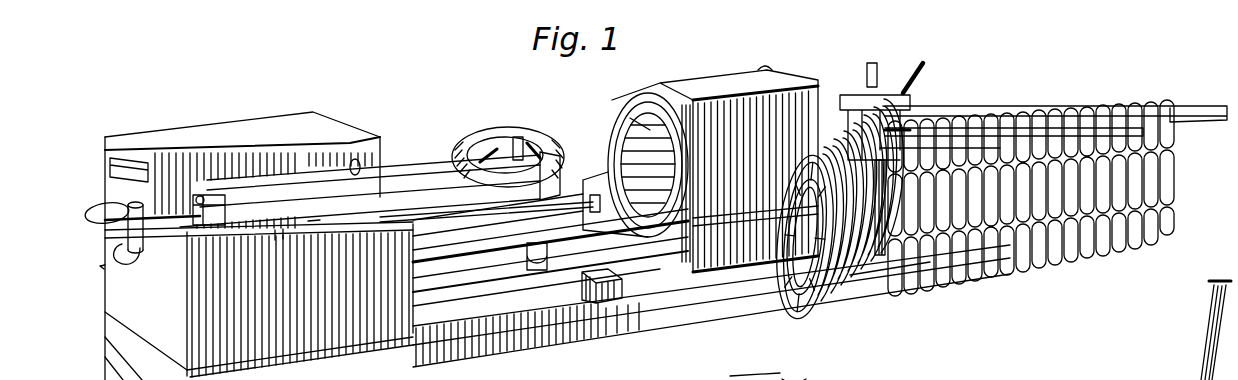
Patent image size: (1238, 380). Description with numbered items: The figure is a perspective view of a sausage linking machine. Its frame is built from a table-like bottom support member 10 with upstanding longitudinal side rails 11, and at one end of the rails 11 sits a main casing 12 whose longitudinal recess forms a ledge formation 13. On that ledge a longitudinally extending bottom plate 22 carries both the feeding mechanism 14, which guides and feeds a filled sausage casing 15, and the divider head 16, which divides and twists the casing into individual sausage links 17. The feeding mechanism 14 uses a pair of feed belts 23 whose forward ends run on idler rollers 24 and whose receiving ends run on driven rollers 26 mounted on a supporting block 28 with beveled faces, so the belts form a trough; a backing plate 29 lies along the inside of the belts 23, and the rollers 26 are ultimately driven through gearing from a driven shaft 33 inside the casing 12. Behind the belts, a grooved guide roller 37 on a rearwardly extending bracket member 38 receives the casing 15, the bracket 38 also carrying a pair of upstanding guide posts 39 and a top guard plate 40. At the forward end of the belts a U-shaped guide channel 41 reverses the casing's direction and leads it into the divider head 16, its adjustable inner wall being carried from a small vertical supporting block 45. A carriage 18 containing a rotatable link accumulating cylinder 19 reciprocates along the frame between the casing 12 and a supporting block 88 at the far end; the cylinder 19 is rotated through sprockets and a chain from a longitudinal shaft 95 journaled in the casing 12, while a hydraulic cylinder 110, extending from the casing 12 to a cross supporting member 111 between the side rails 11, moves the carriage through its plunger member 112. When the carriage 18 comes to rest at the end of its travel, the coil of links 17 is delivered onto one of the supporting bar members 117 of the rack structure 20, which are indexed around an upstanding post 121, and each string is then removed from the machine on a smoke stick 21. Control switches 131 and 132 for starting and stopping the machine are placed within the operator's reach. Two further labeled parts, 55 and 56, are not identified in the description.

The bottom support member 10 is at (547, 350).
The side rails 11 is at (570, 338).
The main casing 12 is at (252, 128).
The ledge formation 13 is at (275, 240).
The casing feeding mechanism 14 is at (402, 167).
The filled sausage casing 15 is at (100, 266).
The divider head 16 is at (487, 130).
The sausage links 17 is at (823, 303).
The carriage 18 is at (688, 80).
The link accumulating cylinder 19 is at (622, 148).
The rack structure 20 is at (896, 70).
The smoke stick 21 is at (1200, 110).
The bottom plate 22 is at (313, 222).
The feed belts 23 is at (307, 200).
The idler rollers 24 is at (530, 147).
The driven rollers 26 is at (228, 210).
The supporting block 28 is at (213, 235).
The backing plate 29 is at (374, 183).
The driven shaft 33 is at (470, 300).
The guide roller 37 is at (143, 256).
The bracket member 38 is at (173, 238).
The guide posts 39 is at (137, 200).
The top guard plate 40 is at (90, 206).
The guide channel 41 is at (548, 162).
The supporting block 45 is at (506, 140).
The ring segment 55 is at (470, 143).
The beam rail 56 is at (424, 170).
The supporting block 88 is at (873, 282).
The shaft 95 is at (470, 224).
The hydraulic cylinder 110 is at (497, 283).
The cross supporting member 111 is at (593, 307).
The plunger member 112 is at (630, 263).
The supporting bar members 117 is at (637, 132).
The post 121 is at (875, 65).
The control switch 131 is at (130, 171).
The control switch 132 is at (612, 297).